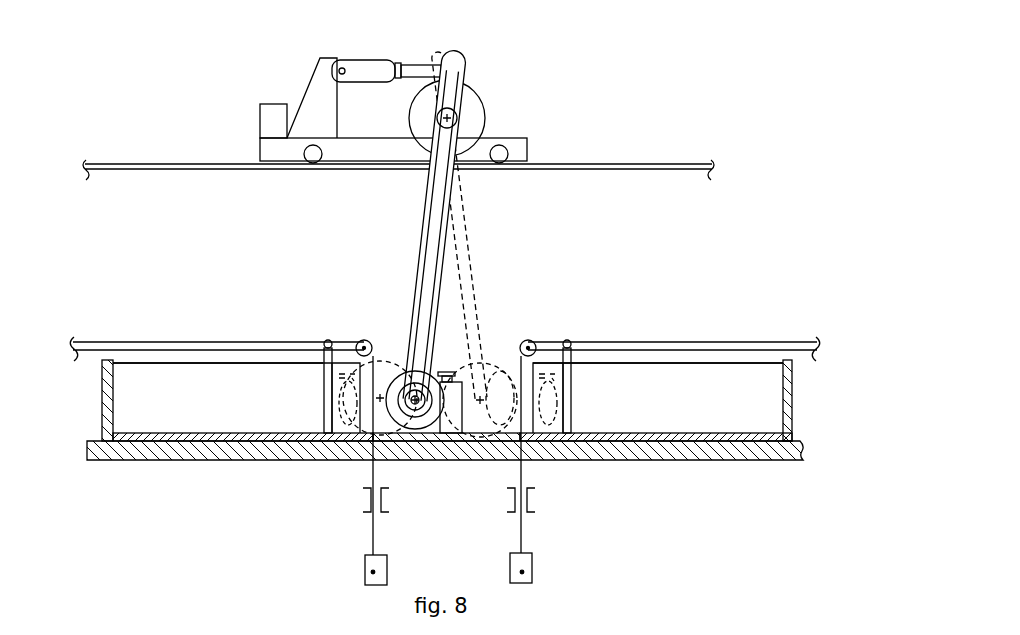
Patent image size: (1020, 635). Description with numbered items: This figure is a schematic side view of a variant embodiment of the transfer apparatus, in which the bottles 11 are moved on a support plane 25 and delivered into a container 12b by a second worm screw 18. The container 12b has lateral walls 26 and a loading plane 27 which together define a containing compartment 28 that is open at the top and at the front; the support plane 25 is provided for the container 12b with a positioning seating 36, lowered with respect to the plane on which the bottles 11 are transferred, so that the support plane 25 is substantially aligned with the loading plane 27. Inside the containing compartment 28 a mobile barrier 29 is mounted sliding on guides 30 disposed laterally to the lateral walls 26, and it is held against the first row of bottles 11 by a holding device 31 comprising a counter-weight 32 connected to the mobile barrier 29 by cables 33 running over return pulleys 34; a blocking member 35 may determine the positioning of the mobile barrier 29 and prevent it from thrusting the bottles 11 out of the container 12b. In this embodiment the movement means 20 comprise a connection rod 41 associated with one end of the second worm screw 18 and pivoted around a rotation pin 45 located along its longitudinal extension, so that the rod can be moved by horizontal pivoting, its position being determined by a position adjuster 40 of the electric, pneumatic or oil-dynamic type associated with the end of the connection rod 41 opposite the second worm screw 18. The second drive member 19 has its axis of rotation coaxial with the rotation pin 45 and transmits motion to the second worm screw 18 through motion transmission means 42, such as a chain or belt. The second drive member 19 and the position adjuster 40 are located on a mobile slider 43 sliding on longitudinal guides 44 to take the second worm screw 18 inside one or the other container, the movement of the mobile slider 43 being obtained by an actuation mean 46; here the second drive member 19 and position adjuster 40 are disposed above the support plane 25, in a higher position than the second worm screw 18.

The bottles 11 is at (455, 403).
The container 12b is at (99, 426).
The second worm screw 18 is at (428, 390).
The second drive member 19 is at (467, 98).
The movement means 20 is at (390, 278).
The support plane 25 is at (485, 434).
The lateral walls 26 is at (106, 397).
The loading plane 27 is at (208, 440).
The containing compartment 28 is at (110, 373).
The mobile barrier 29 is at (327, 420).
The guides 30 is at (248, 345).
The holding device 31 is at (433, 513).
The counter-weight 32 is at (373, 572).
The cables 33 is at (375, 530).
The return pulleys 34 is at (362, 347).
The blocking member 35 is at (380, 498).
The positioning seating 36 is at (178, 443).
The position adjuster 40 is at (362, 73).
The connection rod 41 is at (436, 213).
The motion transmission means 42 is at (445, 257).
The mobile slider 43 is at (357, 159).
The longitudinal guides 44 is at (628, 167).
The rotation pin 45 is at (449, 117).
The actuation mean 46 is at (273, 122).